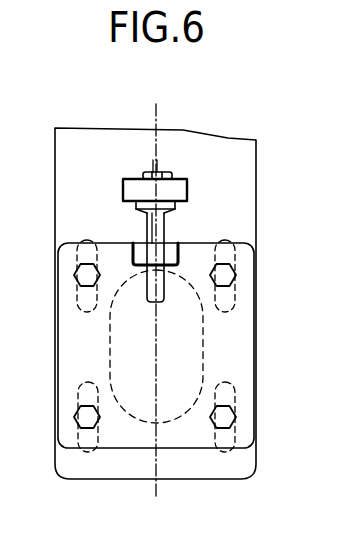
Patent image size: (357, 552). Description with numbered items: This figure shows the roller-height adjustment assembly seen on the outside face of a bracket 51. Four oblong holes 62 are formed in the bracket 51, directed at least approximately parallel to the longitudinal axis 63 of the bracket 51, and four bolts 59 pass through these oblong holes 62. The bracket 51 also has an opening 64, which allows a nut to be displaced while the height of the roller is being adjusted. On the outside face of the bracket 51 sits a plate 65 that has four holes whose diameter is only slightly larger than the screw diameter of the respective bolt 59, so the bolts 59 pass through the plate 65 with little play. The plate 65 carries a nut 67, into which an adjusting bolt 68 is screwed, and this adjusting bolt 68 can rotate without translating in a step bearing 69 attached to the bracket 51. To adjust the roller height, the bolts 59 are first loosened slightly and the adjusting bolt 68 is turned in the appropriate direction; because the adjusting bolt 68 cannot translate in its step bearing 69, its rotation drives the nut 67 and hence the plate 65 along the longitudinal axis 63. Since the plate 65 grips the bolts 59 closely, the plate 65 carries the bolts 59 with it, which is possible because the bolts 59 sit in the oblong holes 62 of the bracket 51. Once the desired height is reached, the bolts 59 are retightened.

The bracket 51 is at (62, 181).
The bolts 59 is at (82, 281).
The oblong holes 62 is at (87, 242).
The longitudinal axis 63 is at (157, 484).
The opening 64 is at (111, 366).
The plate 65 is at (63, 348).
The nut 67 is at (144, 242).
The adjusting bolt 68 is at (151, 171).
The step bearing 69 is at (123, 189).